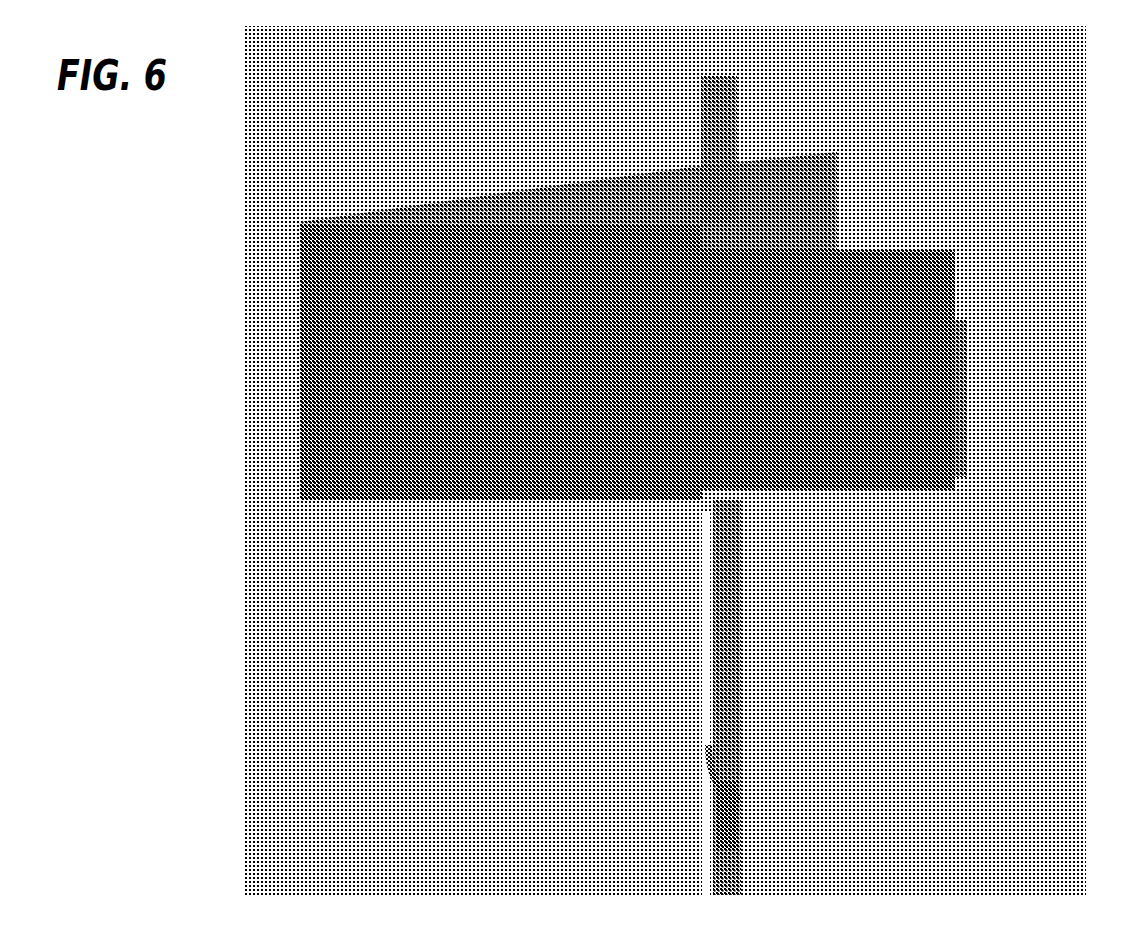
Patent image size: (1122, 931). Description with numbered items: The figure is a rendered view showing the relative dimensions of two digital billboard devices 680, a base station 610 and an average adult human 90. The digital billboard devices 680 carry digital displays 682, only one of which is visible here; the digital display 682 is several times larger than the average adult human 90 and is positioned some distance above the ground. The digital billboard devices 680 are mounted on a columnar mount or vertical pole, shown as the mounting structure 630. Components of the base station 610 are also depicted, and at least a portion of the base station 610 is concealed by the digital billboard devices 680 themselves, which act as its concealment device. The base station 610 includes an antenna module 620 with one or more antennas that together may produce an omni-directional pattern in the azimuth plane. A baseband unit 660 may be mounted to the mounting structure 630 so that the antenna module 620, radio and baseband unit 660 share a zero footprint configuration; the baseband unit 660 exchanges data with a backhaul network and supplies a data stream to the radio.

The average adult human 90 is at (690, 795).
The base station 610 is at (627, 86).
The antenna module 620 is at (760, 117).
The mounting structure 630 is at (680, 635).
The baseband unit 660 is at (797, 530).
The digital billboard device 680 is at (380, 200).
The digital display 682 is at (305, 352).